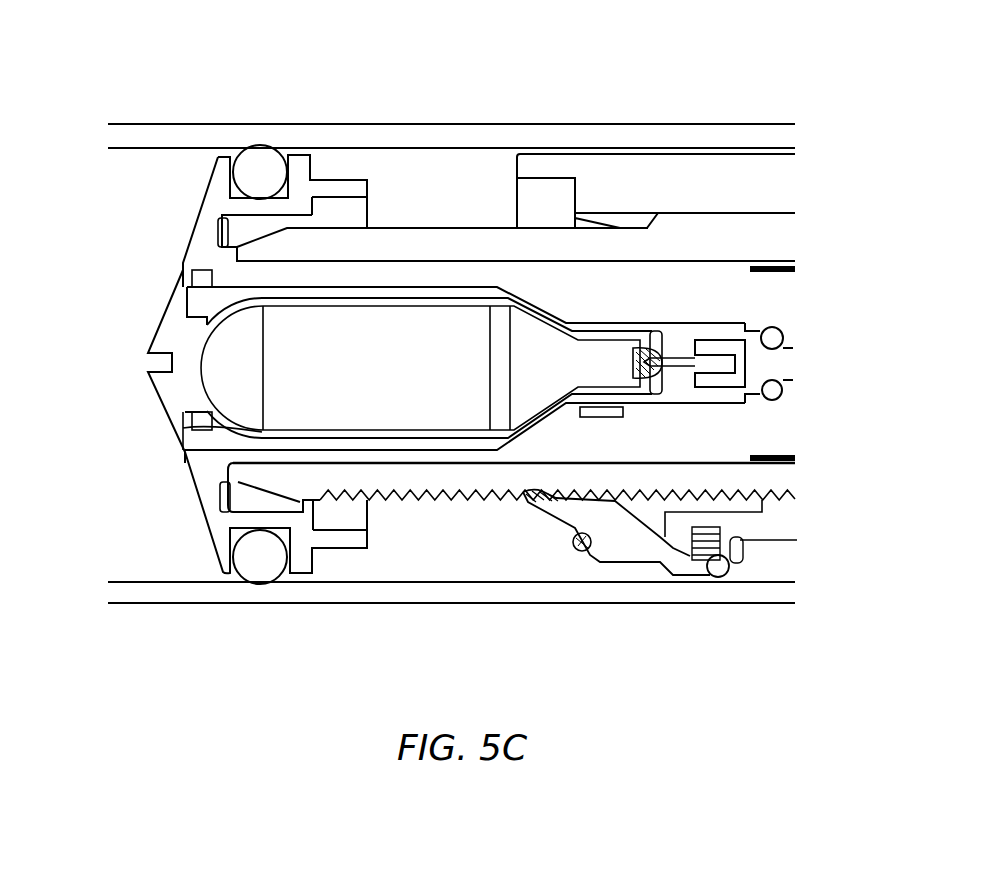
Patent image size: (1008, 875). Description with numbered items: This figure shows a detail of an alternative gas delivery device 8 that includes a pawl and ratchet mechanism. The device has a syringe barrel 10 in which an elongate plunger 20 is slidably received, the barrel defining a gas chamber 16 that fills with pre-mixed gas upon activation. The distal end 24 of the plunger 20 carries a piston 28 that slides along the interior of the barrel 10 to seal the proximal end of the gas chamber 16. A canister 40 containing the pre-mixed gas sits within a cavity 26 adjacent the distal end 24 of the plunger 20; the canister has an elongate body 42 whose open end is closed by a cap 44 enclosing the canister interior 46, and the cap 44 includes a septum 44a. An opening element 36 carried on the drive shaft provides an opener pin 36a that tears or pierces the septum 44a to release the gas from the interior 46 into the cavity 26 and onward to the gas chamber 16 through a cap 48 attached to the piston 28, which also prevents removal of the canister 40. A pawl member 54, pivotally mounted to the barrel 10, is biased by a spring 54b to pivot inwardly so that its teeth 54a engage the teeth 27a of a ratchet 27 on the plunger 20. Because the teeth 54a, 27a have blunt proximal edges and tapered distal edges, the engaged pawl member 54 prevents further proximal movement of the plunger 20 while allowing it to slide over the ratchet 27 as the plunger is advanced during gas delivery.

The device 8 is at (738, 87).
The syringe barrel 10 is at (712, 607).
The gas chamber 16 is at (120, 311).
The plunger 20 is at (676, 211).
The distal end of the plunger 24 is at (384, 226).
The cavity 26 is at (177, 430).
The ratchet 27 is at (442, 495).
The ratchet teeth 27a is at (465, 500).
The piston 28 is at (199, 219).
The opening element 36 is at (791, 347).
The opener pin 36a is at (674, 352).
The canister 40 is at (433, 284).
The canister body 42 is at (372, 285).
The cap 44 is at (656, 349).
The septum 44a is at (665, 378).
The canister interior 46 is at (396, 370).
The cap 48 is at (162, 405).
The pawl member 54 is at (638, 572).
The pawl teeth 54a is at (523, 494).
The spring 54b is at (748, 545).